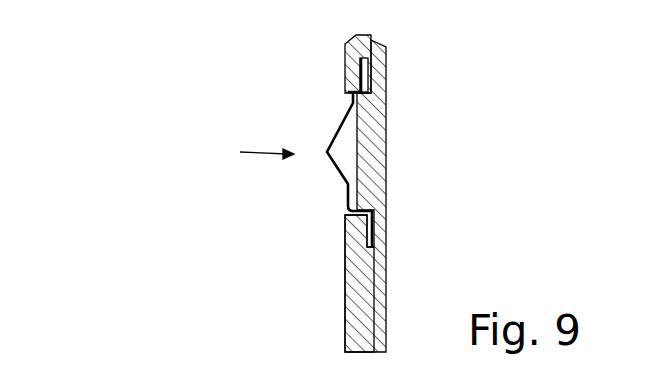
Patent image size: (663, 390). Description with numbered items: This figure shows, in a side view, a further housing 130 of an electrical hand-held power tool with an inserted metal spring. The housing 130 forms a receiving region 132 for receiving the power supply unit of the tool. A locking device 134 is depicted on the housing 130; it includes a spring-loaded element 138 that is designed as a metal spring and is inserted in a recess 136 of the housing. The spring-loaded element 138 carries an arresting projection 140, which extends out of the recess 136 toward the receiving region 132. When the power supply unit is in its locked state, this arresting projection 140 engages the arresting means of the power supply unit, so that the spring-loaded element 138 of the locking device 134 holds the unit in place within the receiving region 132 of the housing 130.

The housing 130 is at (386, 118).
The receiving region 132 is at (357, 268).
The locking device 134 is at (240, 152).
The recess 136 is at (369, 62).
The spring-loaded element 138 is at (345, 86).
The arresting projection 140 is at (337, 163).